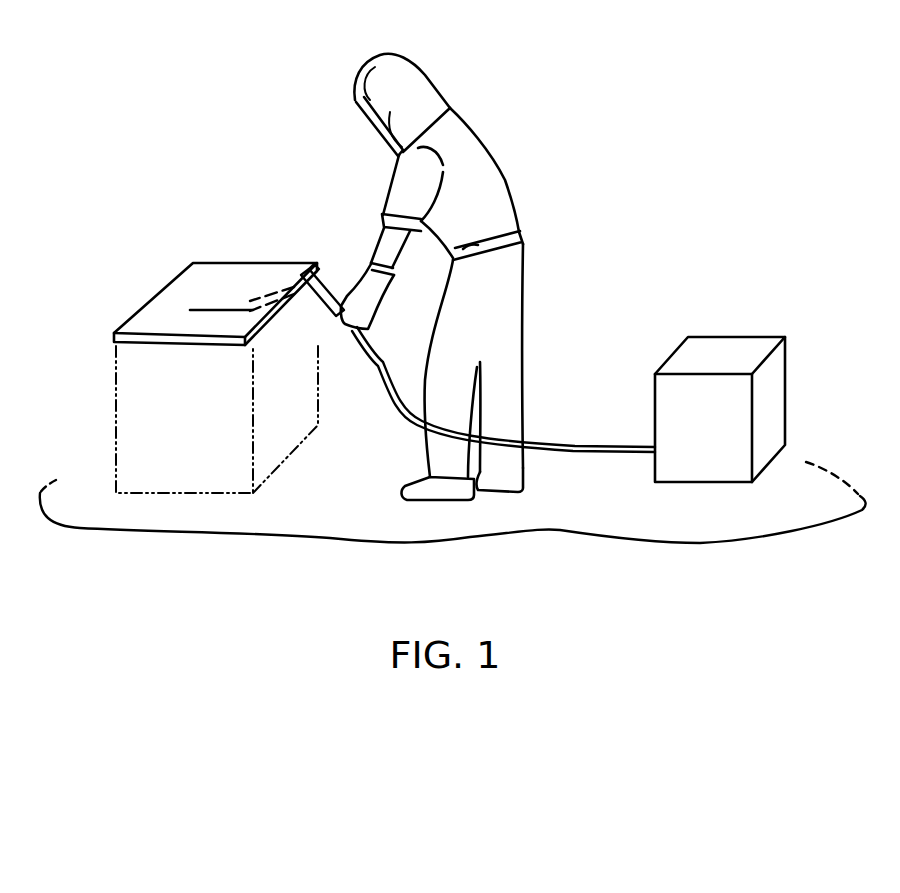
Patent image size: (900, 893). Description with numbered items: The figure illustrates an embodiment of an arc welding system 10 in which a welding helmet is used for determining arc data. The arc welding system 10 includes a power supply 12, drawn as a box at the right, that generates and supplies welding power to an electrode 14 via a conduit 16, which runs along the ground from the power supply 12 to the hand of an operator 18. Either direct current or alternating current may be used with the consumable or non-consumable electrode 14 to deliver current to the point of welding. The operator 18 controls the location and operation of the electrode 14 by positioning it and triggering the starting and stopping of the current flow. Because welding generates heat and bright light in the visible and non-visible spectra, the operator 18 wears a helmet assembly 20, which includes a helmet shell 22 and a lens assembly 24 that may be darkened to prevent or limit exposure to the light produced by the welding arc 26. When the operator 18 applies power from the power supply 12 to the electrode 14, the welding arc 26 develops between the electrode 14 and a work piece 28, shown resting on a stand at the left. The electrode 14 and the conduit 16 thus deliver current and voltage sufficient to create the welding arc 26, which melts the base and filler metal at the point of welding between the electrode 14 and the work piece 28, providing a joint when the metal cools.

The arc welding system 10 is at (668, 58).
The power supply 12 is at (736, 336).
The electrode 14 is at (326, 285).
The conduit 16 is at (579, 443).
The operator 18 is at (515, 172).
The helmet assembly 20 is at (412, 95).
The helmet shell 22 is at (406, 114).
The lens assembly 24 is at (372, 128).
The welding arc 26 is at (264, 282).
The work piece 28 is at (251, 304).